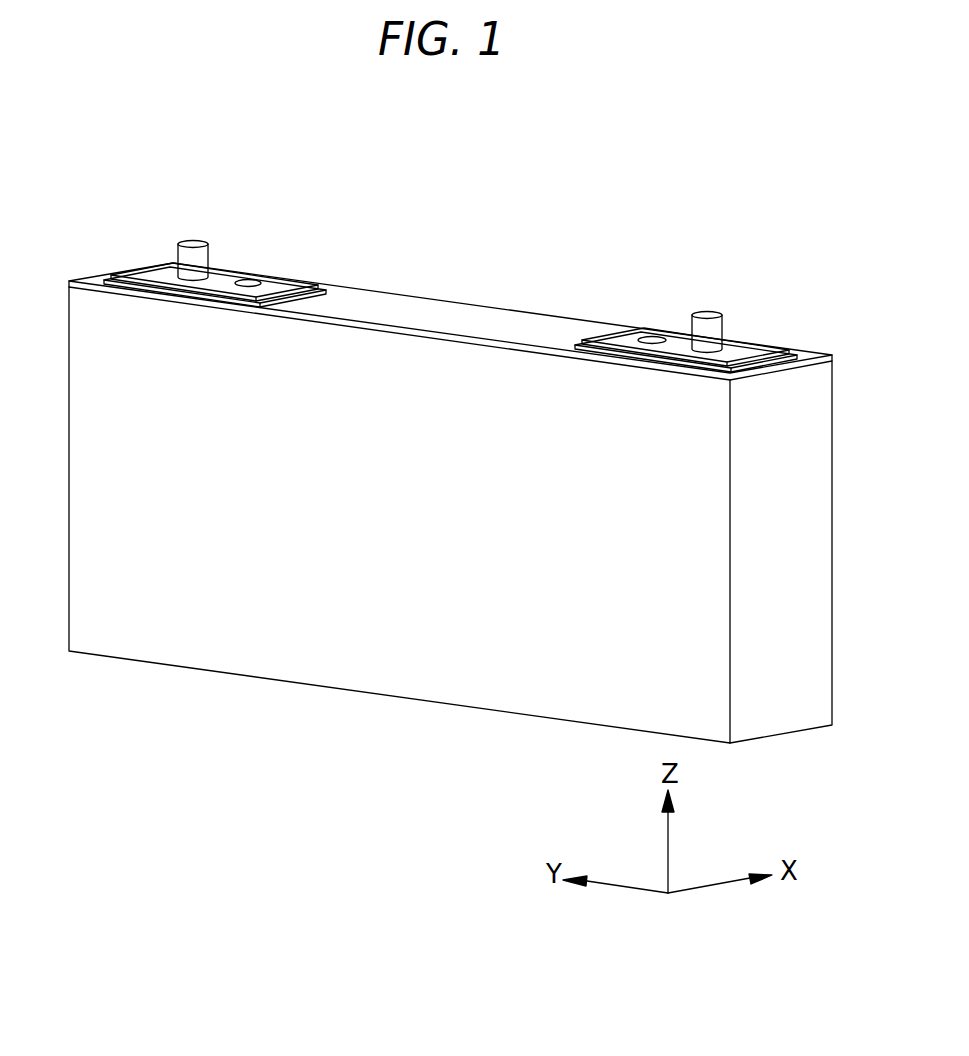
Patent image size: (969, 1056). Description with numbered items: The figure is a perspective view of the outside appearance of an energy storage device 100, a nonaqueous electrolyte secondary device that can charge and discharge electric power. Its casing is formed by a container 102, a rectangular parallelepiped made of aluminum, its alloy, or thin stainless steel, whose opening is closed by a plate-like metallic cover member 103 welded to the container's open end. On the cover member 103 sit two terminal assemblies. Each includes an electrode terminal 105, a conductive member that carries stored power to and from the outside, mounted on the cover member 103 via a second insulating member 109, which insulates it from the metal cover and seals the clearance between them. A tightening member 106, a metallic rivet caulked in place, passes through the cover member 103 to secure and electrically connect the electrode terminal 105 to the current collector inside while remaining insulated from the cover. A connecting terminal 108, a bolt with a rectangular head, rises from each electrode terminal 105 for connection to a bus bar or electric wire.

The energy storage device 100 is at (722, 200).
The container 102 is at (223, 675).
The cover member 103 is at (428, 311).
The electrode terminal 105 is at (283, 285).
The tightening member 106 is at (248, 281).
The connecting terminal 108 is at (197, 243).
The second insulating member 109 is at (323, 287).